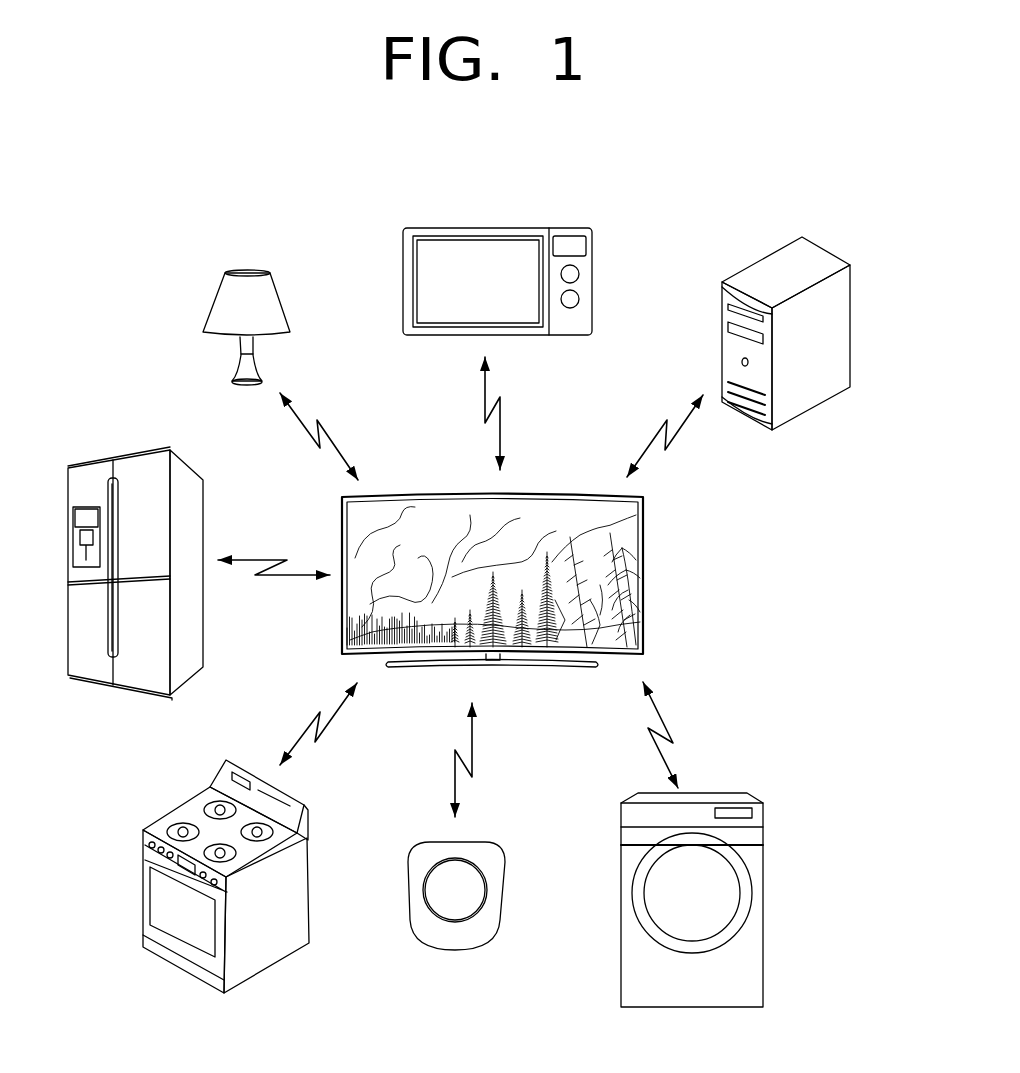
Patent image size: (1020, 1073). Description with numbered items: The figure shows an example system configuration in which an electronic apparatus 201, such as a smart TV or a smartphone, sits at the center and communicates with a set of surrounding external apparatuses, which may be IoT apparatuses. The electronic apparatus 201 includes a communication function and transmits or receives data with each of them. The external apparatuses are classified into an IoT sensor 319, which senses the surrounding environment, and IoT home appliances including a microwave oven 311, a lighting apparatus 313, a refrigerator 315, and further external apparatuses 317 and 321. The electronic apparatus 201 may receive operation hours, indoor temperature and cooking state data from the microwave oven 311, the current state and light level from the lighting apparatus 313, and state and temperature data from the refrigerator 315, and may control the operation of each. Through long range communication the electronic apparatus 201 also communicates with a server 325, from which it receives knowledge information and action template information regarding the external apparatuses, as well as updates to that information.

The electronic apparatus 201 is at (643, 585).
The microwave oven 311 is at (514, 225).
The lighting apparatus 313 is at (250, 268).
The refrigerator 315 is at (141, 450).
The external apparatus 317 is at (192, 805).
The IoT sensor 319 is at (490, 843).
The external apparatus 321 is at (725, 792).
The server 325 is at (770, 248).